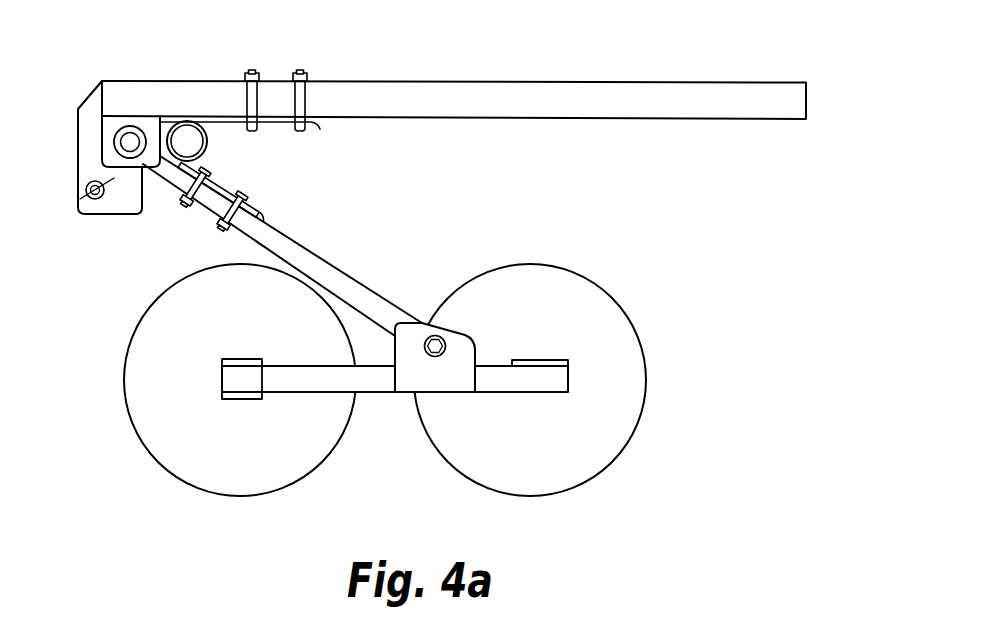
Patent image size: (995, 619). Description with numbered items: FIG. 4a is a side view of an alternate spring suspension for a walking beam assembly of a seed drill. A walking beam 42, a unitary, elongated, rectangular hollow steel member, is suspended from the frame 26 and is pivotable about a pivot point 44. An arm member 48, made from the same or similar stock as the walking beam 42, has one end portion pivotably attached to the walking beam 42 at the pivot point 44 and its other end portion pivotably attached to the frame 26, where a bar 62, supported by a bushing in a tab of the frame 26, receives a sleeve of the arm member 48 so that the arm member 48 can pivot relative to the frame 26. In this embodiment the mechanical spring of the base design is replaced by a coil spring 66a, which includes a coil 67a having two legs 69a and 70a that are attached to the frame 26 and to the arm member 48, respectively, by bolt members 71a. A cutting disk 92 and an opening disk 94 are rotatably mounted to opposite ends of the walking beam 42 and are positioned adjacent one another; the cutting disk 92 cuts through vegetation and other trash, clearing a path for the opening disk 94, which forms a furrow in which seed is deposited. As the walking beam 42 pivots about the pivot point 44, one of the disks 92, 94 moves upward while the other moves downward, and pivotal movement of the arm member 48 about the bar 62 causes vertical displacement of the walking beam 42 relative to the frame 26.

The frame 26 is at (520, 90).
The walking beam 42 is at (370, 395).
The pivot point 44 is at (433, 337).
The arm member 48 is at (347, 277).
The bar 62 is at (130, 142).
The coil spring 66a is at (222, 156).
The coil 67a is at (170, 122).
The leg 69a is at (221, 116).
The leg 70a is at (183, 190).
The bolt members 71a is at (304, 101).
The cutting disk 92 is at (177, 388).
The opening disk 94 is at (593, 342).